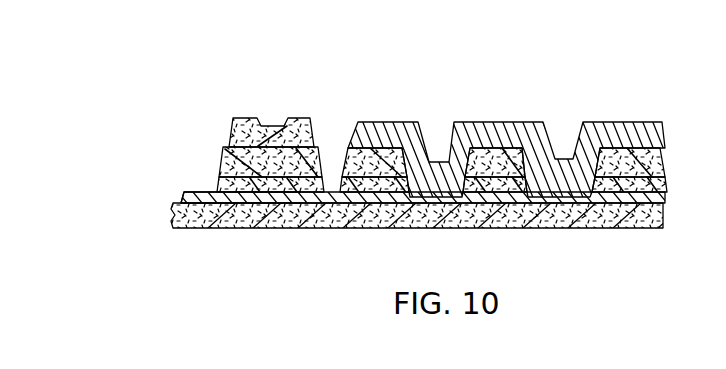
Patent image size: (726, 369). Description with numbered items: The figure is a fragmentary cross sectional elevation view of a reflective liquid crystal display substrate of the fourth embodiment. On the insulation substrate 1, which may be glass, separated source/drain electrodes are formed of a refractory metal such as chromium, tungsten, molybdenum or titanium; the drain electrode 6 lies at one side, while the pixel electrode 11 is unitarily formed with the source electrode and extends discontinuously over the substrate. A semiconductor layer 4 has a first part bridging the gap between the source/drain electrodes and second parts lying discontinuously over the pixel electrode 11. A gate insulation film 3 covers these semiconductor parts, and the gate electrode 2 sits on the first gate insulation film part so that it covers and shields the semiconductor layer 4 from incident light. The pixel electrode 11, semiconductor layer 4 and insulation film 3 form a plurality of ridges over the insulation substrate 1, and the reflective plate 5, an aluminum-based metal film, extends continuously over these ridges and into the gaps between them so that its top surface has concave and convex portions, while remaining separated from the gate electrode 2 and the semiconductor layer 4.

The insulation substrate 1 is at (198, 230).
The gate electrode 2 is at (240, 117).
The gate insulation film 3 is at (224, 148).
The semiconductor layer 4 is at (217, 187).
The reflective plate 5 is at (653, 122).
The drain electrode 6 is at (183, 195).
The pixel electrode 11 is at (666, 195).